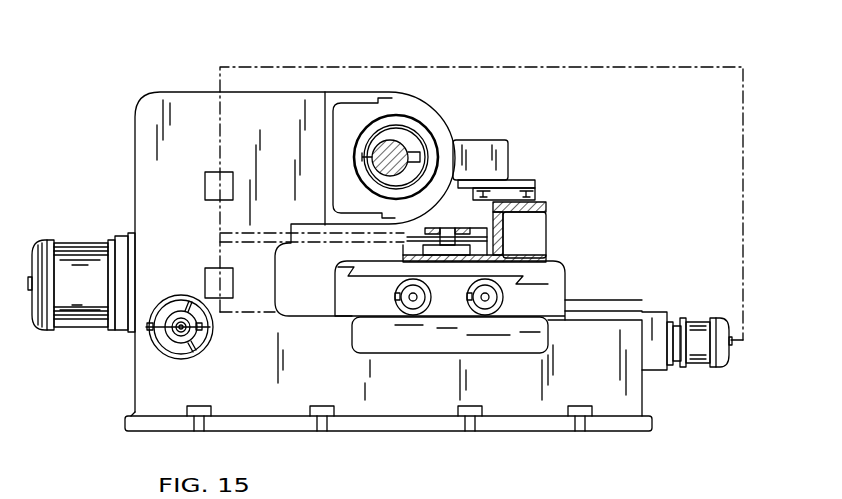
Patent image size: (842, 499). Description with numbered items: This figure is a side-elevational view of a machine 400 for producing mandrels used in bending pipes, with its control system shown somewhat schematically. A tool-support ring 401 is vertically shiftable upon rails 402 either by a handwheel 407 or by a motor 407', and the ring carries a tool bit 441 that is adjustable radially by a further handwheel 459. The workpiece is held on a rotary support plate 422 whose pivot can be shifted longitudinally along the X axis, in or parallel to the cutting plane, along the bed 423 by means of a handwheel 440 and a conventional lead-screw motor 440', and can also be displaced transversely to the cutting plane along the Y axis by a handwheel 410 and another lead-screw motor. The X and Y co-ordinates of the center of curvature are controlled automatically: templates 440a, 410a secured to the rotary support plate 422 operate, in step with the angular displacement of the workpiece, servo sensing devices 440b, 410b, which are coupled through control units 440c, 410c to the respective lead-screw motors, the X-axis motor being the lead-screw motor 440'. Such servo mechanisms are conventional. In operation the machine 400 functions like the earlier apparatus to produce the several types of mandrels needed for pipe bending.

The machine 400 is at (196, 84).
The tool-support ring 401 is at (403, 106).
The rails 402 is at (302, 93).
The tool bit 441 is at (420, 150).
The control unit 440c is at (208, 186).
The control unit 410c is at (207, 270).
The motor 407' is at (81, 270).
The handwheel 407 is at (203, 327).
The handwheel 459 is at (193, 338).
The servo sensing device 440b is at (406, 233).
The servo sensing device 410b is at (404, 242).
The template 440a is at (472, 231).
The template 410a is at (472, 241).
The support plate 422 is at (566, 262).
The handwheel 410 is at (395, 297).
The handwheel 440 is at (509, 298).
The bed 423 is at (583, 305).
The lead-screw motor 440' is at (699, 327).